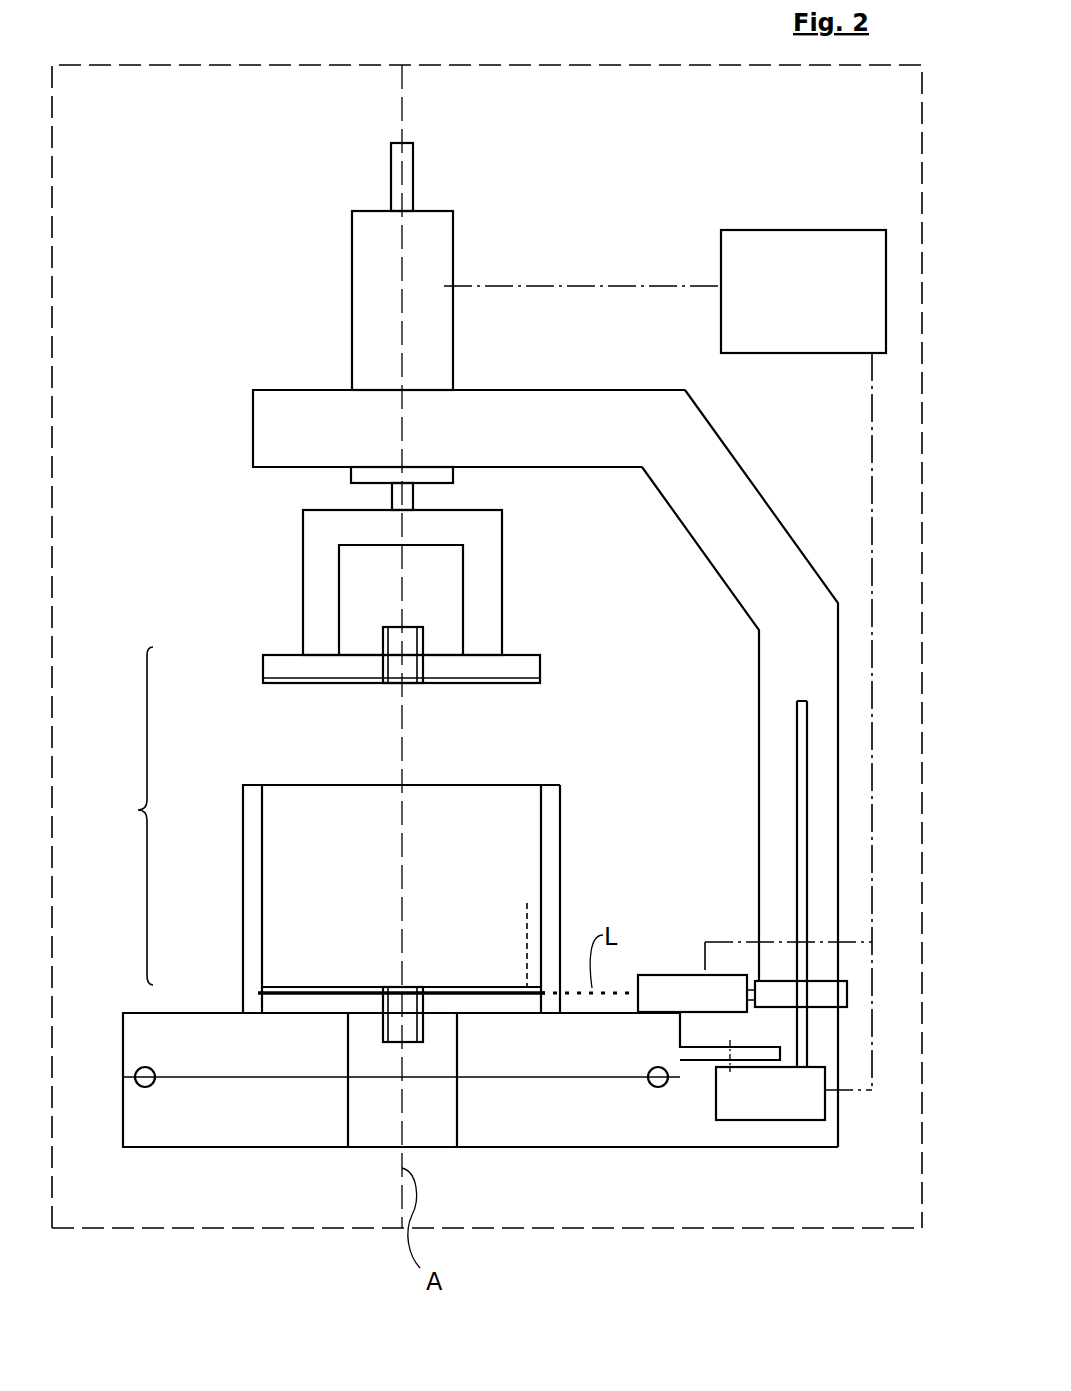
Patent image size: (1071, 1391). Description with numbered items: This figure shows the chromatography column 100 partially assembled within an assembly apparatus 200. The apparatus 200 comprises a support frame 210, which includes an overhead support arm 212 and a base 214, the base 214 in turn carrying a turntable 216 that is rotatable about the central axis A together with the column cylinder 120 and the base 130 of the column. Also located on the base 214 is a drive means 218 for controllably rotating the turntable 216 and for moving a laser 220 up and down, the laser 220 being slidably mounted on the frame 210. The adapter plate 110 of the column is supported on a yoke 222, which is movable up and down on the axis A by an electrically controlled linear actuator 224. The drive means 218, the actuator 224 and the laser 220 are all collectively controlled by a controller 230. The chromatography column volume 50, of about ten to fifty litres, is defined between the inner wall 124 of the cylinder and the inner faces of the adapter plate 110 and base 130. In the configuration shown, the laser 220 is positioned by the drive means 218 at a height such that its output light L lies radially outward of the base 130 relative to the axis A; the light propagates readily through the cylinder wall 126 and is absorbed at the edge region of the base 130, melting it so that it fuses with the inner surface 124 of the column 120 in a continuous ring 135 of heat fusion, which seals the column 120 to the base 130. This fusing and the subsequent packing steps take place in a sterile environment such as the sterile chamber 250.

The assembly apparatus 200 is at (205, 57).
The sterile chamber 250 is at (272, 1230).
The controller 230 is at (665, 660).
The electrically controlled linear actuator 224 is at (378, 258).
The overhead support arm 212 is at (308, 424).
The support frame 210 is at (738, 510).
The yoke 222 is at (322, 580).
The adapter plate 110 is at (263, 672).
The chromatography column 100 is at (132, 812).
The column cylinder 120 is at (250, 806).
The inner wall of the column cylinder 124 is at (538, 842).
The column cylinder wall 126 is at (547, 822).
The chromatography column volume 50 is at (320, 913).
The base 130 is at (290, 998).
The continuous ring of heat fusion 135 is at (527, 903).
The laser 220 is at (672, 975).
The base of the support frame 214 is at (197, 1148).
The turntable 216 is at (502, 1058).
The drive means 218 is at (750, 1100).